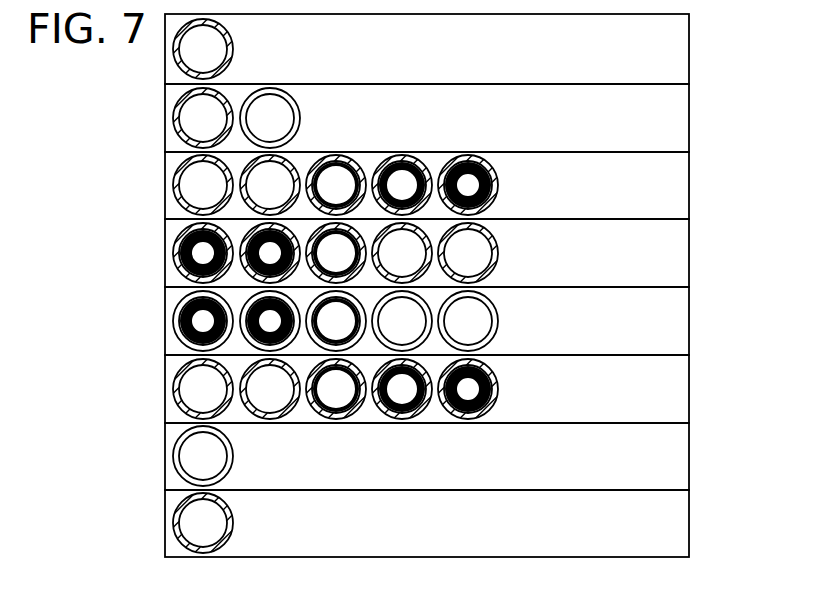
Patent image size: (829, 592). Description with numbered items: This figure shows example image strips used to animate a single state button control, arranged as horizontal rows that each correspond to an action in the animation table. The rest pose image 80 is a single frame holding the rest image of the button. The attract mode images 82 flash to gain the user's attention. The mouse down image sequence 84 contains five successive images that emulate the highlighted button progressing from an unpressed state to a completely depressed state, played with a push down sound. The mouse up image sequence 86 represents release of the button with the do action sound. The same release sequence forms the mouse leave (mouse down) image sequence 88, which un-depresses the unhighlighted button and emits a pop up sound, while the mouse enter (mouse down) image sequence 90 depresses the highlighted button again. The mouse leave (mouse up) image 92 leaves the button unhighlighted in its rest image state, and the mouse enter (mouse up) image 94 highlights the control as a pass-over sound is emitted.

The rest pose image 80 is at (689, 51).
The attract mode images 82 is at (689, 120).
The mouse down image sequence 84 is at (689, 187).
The mouse up image sequence 86 is at (689, 255).
The mouse leave (mouse down) image sequence 88 is at (689, 323).
The mouse enter (mouse down) image sequence 90 is at (689, 391).
The mouse leave (mouse up) image 92 is at (689, 459).
The mouse enter (mouse up) image 94 is at (689, 526).